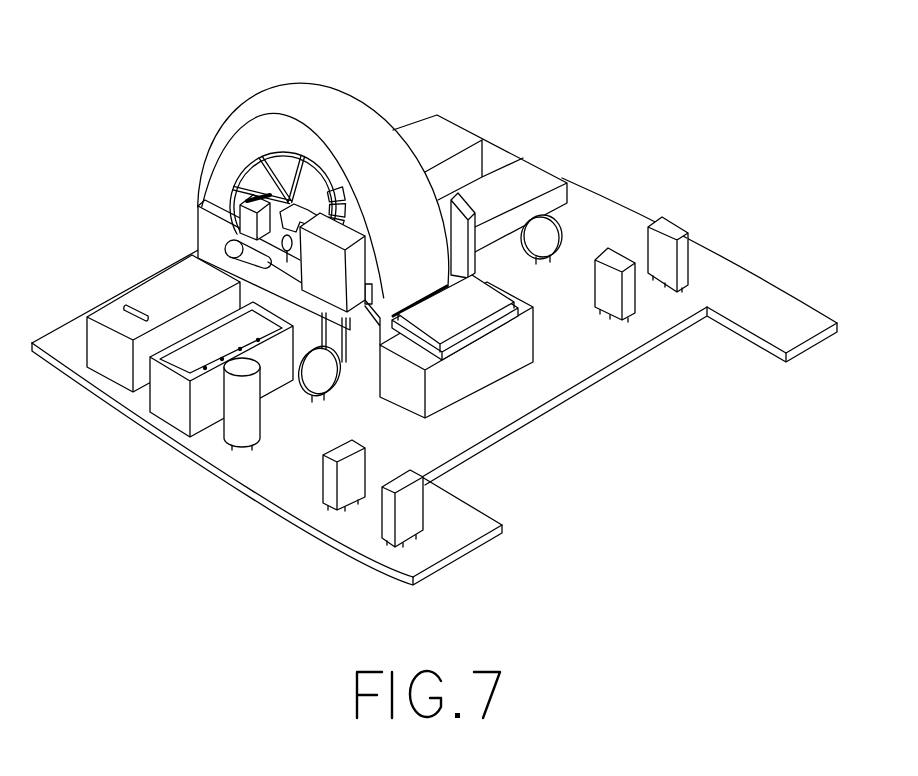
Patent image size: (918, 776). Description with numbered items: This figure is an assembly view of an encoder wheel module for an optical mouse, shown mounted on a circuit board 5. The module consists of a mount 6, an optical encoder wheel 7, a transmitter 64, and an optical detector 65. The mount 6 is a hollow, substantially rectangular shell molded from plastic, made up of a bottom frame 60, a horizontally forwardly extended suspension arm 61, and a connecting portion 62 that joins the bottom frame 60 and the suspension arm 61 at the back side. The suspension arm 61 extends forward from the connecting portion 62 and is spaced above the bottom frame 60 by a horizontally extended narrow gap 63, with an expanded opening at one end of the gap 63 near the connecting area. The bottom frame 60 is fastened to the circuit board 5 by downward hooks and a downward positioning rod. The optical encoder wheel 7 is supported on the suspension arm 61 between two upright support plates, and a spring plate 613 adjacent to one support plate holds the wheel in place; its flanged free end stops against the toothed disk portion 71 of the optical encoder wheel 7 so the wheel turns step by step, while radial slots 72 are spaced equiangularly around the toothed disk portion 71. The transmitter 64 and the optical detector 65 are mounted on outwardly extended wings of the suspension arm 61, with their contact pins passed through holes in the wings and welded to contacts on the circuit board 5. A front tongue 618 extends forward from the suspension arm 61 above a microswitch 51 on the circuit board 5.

The circuit board 5 is at (603, 352).
The mount 6 is at (328, 235).
The optical encoder wheel 7 is at (294, 103).
The microswitch 51 is at (463, 388).
The bottom frame 60 is at (352, 345).
The suspension arm 61 is at (390, 323).
The connecting portion 62 is at (207, 230).
The gap 63 is at (372, 332).
The transmitter 64 is at (340, 247).
The optical detector 65 is at (458, 212).
The toothed disk portion 71 is at (262, 183).
The radial slots 72 is at (298, 213).
The spring plate 613 is at (270, 252).
The front tongue 618 is at (480, 322).